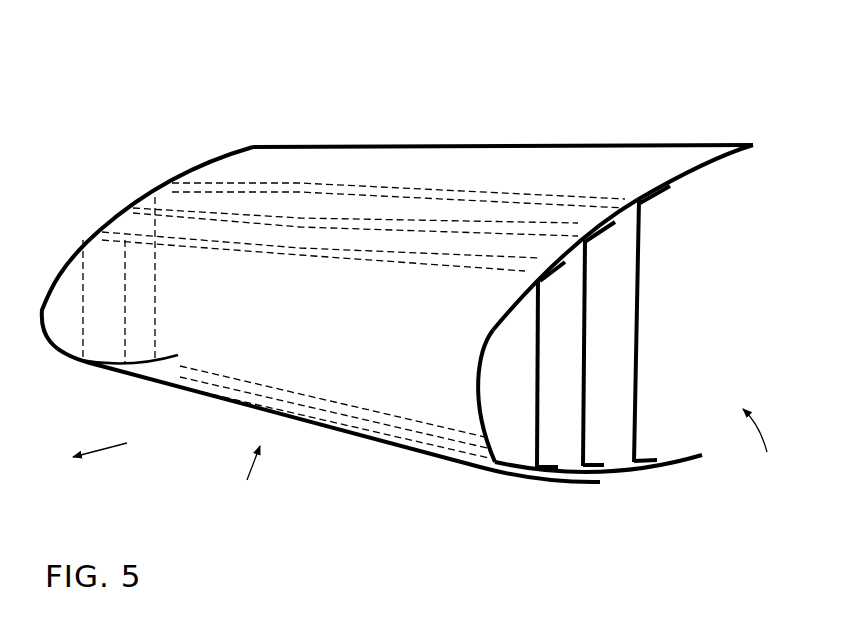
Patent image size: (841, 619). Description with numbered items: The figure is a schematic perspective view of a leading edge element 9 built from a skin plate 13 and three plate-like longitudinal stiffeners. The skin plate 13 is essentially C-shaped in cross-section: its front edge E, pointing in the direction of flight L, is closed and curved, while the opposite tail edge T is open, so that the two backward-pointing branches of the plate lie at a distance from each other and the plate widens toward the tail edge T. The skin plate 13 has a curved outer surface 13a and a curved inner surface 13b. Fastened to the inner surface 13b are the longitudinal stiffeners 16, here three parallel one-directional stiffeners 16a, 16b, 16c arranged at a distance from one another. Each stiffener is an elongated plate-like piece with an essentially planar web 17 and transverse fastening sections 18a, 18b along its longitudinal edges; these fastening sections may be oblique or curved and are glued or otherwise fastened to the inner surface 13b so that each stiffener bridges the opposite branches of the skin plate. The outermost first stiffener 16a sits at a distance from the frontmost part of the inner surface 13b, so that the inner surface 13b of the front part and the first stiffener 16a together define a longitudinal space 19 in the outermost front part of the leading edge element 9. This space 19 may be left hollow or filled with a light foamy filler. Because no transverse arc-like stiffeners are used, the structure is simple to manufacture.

The leading edge element 9 is at (232, 76).
The skin plate 13 is at (350, 162).
The outer surface 13a is at (537, 167).
The inner surface 13b is at (707, 170).
The longitudinal stiffeners 16 is at (680, 353).
The first stiffener 16a is at (520, 432).
The second stiffener 16b is at (562, 447).
The third stiffener 16c is at (608, 447).
The web 17 is at (620, 318).
The fastening section 18a is at (660, 202).
The fastening section 18b is at (643, 457).
The longitudinal space 19 is at (496, 407).
The front edge E is at (250, 484).
The direction of flight L is at (100, 441).
The tail edge T is at (759, 447).